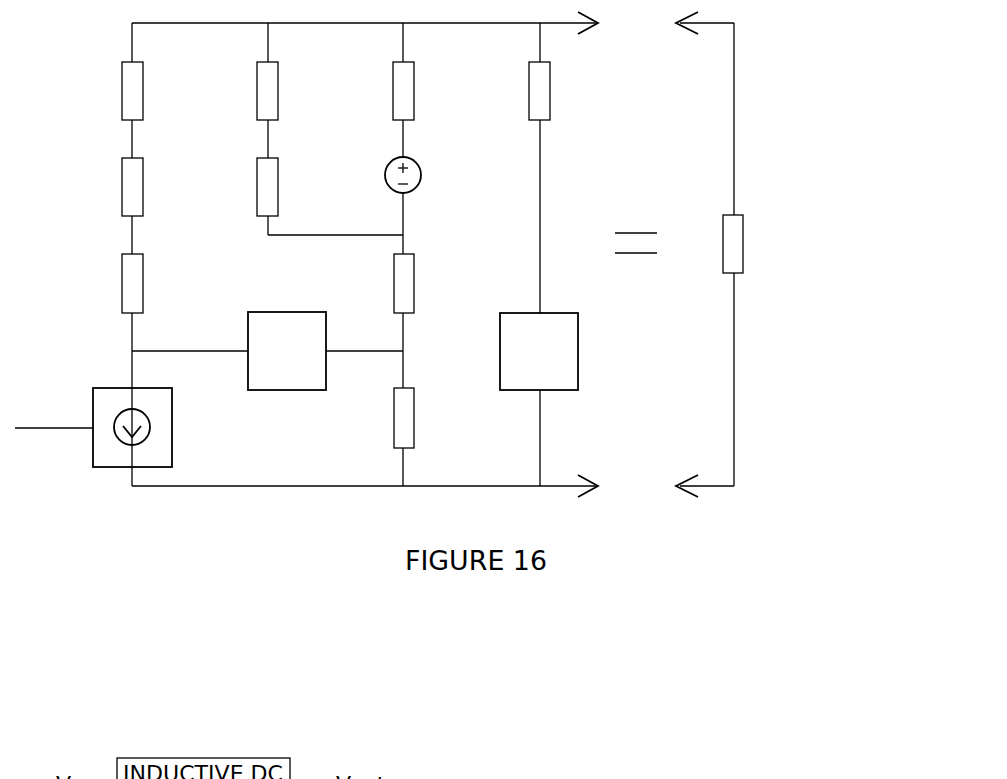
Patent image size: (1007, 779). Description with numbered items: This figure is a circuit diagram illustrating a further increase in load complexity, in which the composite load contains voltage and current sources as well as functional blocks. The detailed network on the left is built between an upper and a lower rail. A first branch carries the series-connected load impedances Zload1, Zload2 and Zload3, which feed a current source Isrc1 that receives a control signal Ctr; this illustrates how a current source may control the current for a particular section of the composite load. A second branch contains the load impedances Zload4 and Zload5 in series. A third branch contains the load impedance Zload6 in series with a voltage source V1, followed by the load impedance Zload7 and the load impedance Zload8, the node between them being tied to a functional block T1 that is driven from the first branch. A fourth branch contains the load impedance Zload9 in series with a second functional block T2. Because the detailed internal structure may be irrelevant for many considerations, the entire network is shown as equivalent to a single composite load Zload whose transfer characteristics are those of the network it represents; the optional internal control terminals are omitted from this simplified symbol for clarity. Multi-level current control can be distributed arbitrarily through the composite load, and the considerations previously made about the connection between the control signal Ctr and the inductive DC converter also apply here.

The load impedance Zload1 is at (169, 91).
The load impedance Zload2 is at (169, 187).
The load impedance Zload3 is at (169, 283).
The load impedance Zload4 is at (304, 91).
The load impedance Zload5 is at (304, 187).
The load impedance Zload6 is at (440, 91).
The load impedance Zload7 is at (440, 283).
The load impedance Zload8 is at (440, 418).
The load impedance Zload9 is at (576, 91).
The voltage source V1 is at (420, 175).
The functional block T1 is at (287, 351).
The functional block T2 is at (539, 351).
The current source Isrc1 is at (158, 427).
The control signal Ctr is at (54, 415).
The composite load Zload is at (763, 254).